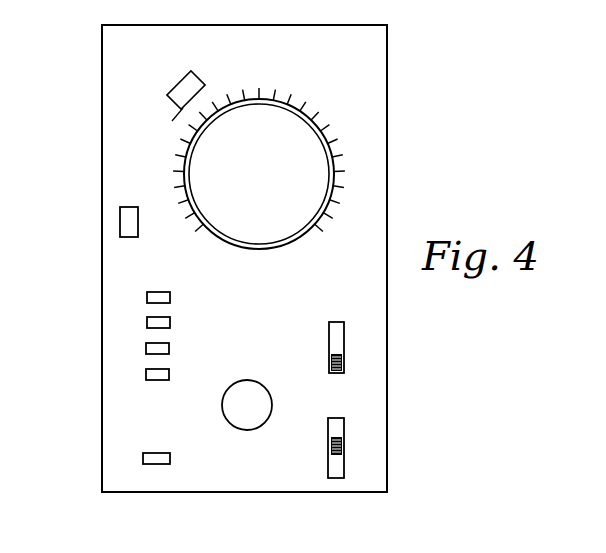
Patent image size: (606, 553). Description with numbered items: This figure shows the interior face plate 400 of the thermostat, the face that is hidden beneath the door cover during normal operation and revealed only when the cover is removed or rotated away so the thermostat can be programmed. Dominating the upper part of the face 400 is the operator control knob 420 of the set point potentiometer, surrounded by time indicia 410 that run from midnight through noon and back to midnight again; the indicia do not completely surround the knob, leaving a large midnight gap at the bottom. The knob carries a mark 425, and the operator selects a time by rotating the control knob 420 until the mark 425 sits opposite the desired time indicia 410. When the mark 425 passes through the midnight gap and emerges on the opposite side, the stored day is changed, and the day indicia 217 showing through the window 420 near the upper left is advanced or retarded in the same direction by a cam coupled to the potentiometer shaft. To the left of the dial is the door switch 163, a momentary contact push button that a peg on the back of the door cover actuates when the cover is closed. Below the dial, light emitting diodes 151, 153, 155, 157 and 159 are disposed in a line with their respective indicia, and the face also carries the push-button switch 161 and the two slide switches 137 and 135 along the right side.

The face plate 400 is at (366, 92).
The time indicia 410 is at (352, 58).
The day indicia 217 is at (186, 76).
The operator control knob 420 is at (173, 93).
The mark 425 is at (294, 116).
The door switch 163 is at (128, 222).
The light emitting diode 151 is at (150, 297).
The light emitting diode 153 is at (150, 322).
The light emitting diode 155 is at (149, 348).
The light emitting diode 157 is at (149, 374).
The light emitting diode 159 is at (147, 458).
The push-button switch 161 is at (262, 362).
The slide switch 137 is at (345, 286).
The slide switch 135 is at (352, 398).